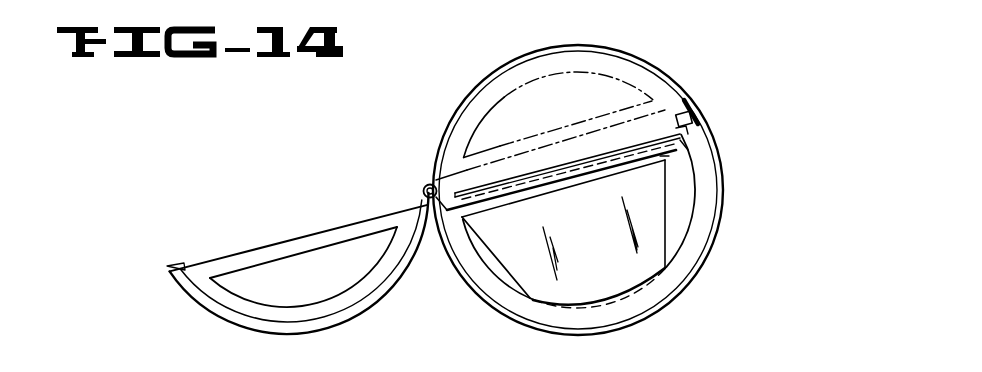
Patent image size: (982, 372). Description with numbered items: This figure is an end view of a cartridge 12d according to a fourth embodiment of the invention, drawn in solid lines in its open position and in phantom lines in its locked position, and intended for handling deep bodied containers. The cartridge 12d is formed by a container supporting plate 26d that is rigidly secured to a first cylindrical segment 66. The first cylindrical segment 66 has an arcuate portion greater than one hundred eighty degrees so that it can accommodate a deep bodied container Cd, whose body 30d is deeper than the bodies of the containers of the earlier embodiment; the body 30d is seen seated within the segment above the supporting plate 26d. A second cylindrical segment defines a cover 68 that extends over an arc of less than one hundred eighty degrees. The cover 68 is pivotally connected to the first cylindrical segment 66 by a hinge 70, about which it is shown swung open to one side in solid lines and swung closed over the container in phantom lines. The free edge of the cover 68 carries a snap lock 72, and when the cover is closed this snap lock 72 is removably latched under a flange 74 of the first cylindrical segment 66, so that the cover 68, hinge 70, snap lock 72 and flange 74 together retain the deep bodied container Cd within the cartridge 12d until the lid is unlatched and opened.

The cartridge 12d is at (752, 114).
The first cylindrical segment 66 is at (718, 238).
The cover 68 is at (453, 108).
The hinge 70 is at (423, 190).
The snap lock 72 is at (697, 108).
The flange 74 is at (680, 136).
The container supporting plate 26d is at (684, 133).
The body 30d is at (605, 229).
The deep bodied container Cd is at (652, 268).